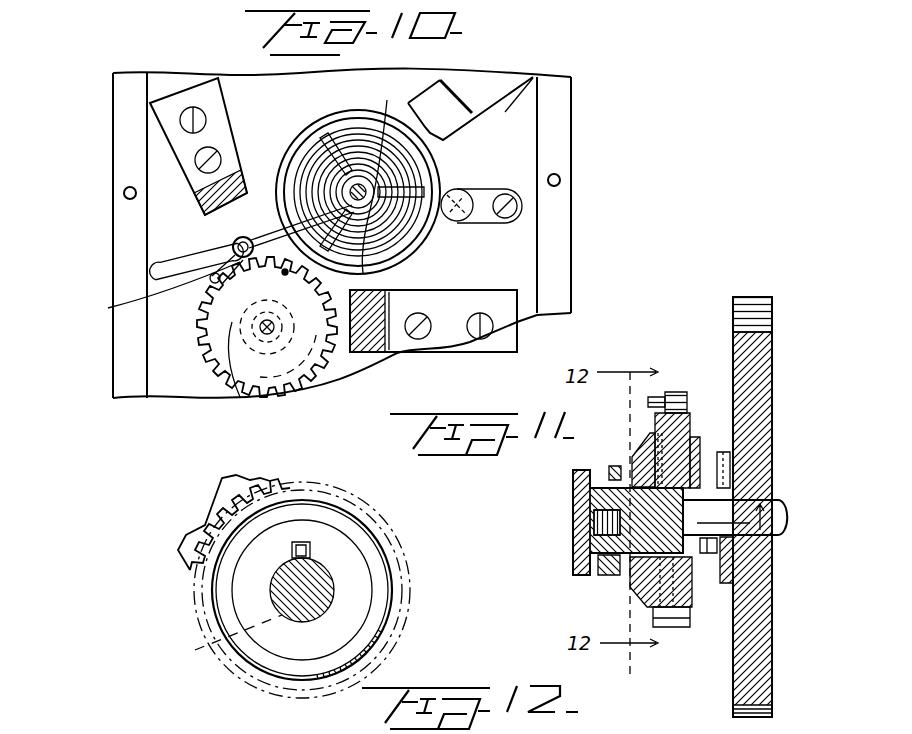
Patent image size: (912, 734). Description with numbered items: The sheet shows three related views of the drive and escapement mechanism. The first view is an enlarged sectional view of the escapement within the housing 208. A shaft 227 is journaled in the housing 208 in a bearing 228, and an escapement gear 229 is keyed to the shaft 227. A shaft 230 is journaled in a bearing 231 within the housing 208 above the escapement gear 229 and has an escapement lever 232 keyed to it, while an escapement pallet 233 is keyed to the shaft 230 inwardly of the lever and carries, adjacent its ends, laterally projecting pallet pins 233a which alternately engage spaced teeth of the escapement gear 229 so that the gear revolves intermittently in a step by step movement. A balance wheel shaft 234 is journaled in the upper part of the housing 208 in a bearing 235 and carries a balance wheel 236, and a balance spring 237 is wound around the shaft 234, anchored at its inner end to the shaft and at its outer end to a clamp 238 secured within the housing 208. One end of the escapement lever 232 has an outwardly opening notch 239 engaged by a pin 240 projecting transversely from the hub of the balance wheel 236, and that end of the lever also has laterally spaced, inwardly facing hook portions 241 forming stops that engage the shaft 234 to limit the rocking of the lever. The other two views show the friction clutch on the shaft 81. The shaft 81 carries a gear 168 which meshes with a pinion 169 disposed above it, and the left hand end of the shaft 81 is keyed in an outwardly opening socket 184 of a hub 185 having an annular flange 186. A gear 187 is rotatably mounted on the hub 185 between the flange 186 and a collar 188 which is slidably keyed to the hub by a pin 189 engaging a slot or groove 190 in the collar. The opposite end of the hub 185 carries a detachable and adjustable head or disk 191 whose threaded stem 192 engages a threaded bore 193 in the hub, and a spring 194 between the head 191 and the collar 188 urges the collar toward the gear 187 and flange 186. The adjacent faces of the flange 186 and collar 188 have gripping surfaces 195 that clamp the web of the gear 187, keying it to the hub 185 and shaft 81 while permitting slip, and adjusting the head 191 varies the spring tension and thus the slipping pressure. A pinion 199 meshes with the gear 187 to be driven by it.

In FIG. 10, the housing 208 is at (507, 108).
In FIG. 10, the shaft 227 is at (270, 335).
In FIG. 10, the bearing 228 is at (378, 354).
In FIG. 10, the escapement gear 229 is at (233, 382).
In FIG. 10, the shaft 230 is at (237, 242).
In FIG. 10, the bearing 231 is at (243, 150).
In FIG. 10, the escapement lever 232 is at (233, 247).
In FIG. 10, the escapement pallet 233 is at (146, 294).
In FIG. 10, the pallet pins 233a is at (213, 284).
In FIG. 10, the balance wheel shaft 234 is at (388, 106).
In FIG. 10, the bearing 235 is at (428, 100).
In FIG. 10, the balance wheel 236 is at (412, 236).
In FIG. 10, the balance spring 237 is at (418, 178).
In FIG. 10, the clamp 238 is at (452, 207).
In FIG. 10, the notch 239 is at (292, 218).
In FIG. 10, the pin 240 is at (417, 250).
In FIG. 10, the hook portions 241 is at (330, 200).
In FIG. 11, the shaft 81 is at (781, 516).
In FIG. 12, the shaft 81 is at (212, 640).
In FIG. 11, the gear 168 is at (772, 433).
In FIG. 11, the pinion 169 is at (755, 297).
In FIG. 11, the socket 184 is at (703, 482).
In FIG. 11, the hub 185 is at (603, 598).
In FIG. 12, the hub 185 is at (335, 583).
In FIG. 11, the annular flange 186 is at (703, 557).
In FIG. 11, the gear 187 is at (674, 630).
In FIG. 12, the gear 187 is at (258, 494).
In FIG. 11, the collar 188 is at (643, 598).
In FIG. 12, the collar 188 is at (303, 647).
In FIG. 11, the pin 189 is at (615, 462).
In FIG. 12, the pin 189 is at (303, 540).
In FIG. 11, the slot or groove 190 is at (640, 478).
In FIG. 12, the slot or groove 190 is at (312, 550).
In FIG. 11, the head or disk 191 is at (578, 536).
In FIG. 11, the threaded stem 192 is at (575, 522).
In FIG. 11, the threaded bore 193 is at (592, 580).
In FIG. 11, the spring 194 is at (501, 627).
In FIG. 11, the gripping surfaces 195 is at (687, 600).
In FIG. 11, the pinion 199 is at (690, 406).
In FIG. 12, the pinion 199 is at (180, 538).